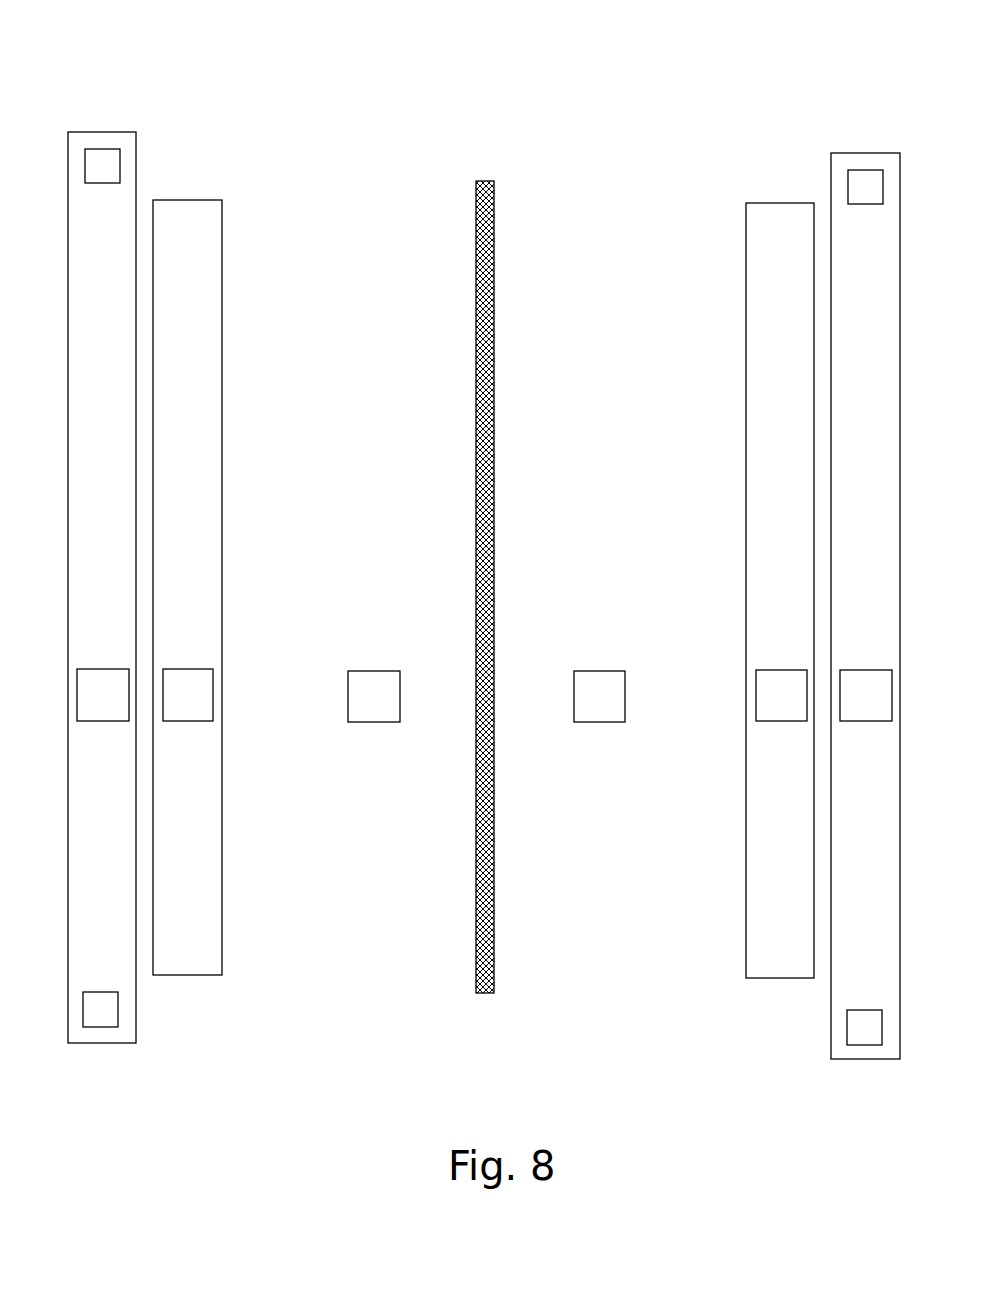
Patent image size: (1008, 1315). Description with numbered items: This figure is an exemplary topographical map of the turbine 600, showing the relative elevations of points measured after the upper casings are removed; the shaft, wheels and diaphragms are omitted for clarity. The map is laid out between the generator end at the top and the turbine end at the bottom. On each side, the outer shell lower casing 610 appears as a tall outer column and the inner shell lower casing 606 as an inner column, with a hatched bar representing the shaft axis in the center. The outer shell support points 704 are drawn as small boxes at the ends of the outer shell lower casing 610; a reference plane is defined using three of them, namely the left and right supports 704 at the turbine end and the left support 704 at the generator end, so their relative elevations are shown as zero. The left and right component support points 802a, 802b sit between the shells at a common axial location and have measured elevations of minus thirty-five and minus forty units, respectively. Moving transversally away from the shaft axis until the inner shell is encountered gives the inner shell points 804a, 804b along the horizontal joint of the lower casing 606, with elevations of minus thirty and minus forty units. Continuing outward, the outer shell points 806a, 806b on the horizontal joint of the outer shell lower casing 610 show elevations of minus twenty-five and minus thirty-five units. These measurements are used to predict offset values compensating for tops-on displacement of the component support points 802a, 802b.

The turbine 600 is at (204, 28).
The lower casing 606 is at (183, 978).
The outer shell lower casing 610 is at (65, 1045).
The outer shell support point 704 is at (103, 147).
The component support point 802a is at (362, 725).
The component support point 802b is at (582, 725).
The inner shell point 804a is at (214, 707).
The inner shell point 804b is at (755, 705).
The outer shell point 806a is at (103, 668).
The outer shell point 806b is at (867, 668).